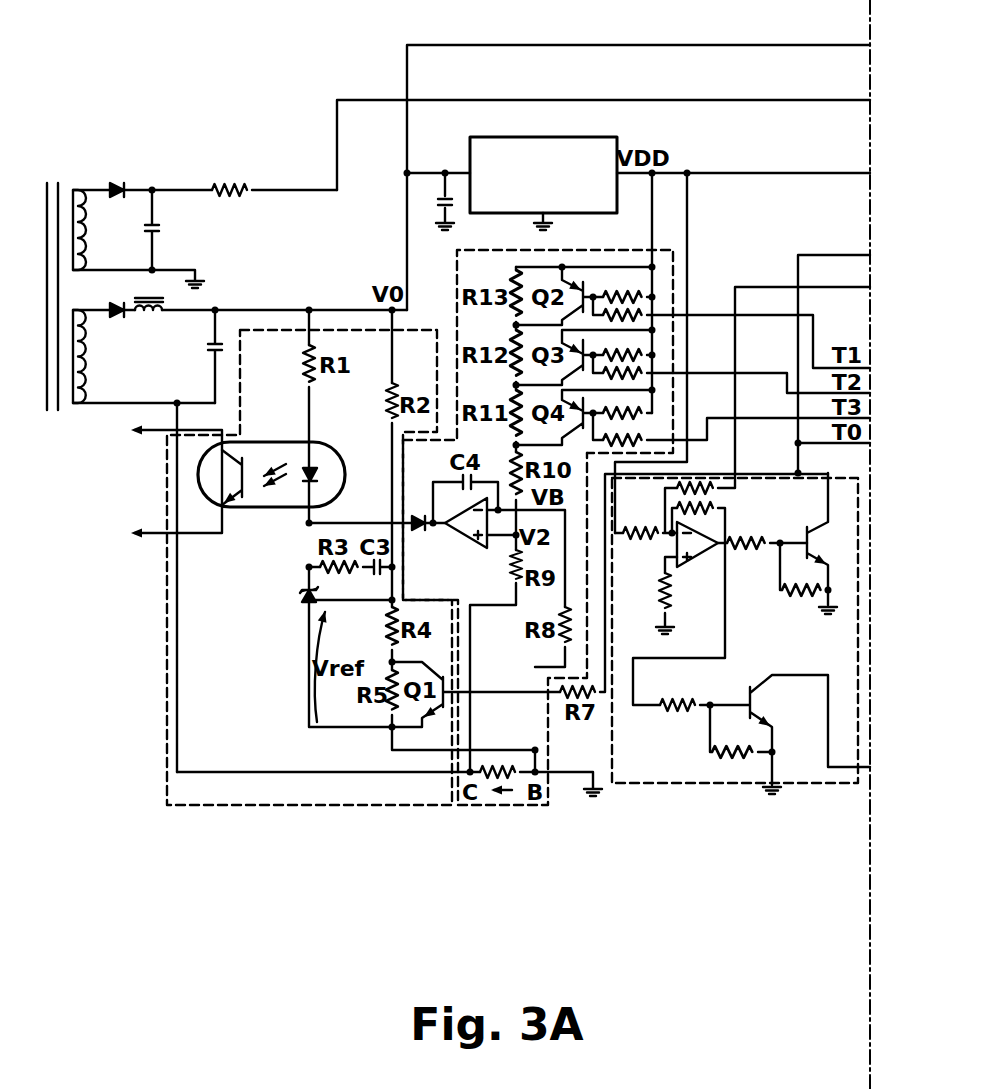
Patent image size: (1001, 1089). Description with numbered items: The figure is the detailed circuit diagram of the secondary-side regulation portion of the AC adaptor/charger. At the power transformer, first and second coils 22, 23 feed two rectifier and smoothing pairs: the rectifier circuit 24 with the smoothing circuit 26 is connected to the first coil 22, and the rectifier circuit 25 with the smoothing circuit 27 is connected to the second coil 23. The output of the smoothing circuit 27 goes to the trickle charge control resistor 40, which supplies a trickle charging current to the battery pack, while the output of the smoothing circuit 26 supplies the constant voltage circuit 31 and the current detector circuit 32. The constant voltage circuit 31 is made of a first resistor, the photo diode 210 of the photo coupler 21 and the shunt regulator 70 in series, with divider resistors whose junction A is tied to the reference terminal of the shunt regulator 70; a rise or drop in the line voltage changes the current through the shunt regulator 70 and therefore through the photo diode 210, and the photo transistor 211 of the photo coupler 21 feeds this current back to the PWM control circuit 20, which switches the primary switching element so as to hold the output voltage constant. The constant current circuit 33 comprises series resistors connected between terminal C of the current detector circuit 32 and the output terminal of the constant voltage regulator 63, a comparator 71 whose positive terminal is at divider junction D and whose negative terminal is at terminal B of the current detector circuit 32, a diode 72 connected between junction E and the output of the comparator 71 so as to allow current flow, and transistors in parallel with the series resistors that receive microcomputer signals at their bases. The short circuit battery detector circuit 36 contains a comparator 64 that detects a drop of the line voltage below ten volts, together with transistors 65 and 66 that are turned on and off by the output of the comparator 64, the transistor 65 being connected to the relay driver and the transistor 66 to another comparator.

The PWM control circuit 20 is at (129, 482).
The photo coupler 21 is at (264, 508).
The photo diode 210 is at (301, 456).
The photo transistor 211 is at (226, 500).
The first coil 22 is at (94, 378).
The second coil 23 is at (80, 187).
The rectifier circuit 24 is at (128, 316).
The rectifier circuit 25 is at (116, 180).
The smoothing circuit 26 is at (207, 350).
The smoothing circuit 27 is at (170, 229).
The constant voltage circuit 31 is at (343, 808).
The current detector circuit 32 is at (508, 795).
The constant current circuit 33 is at (457, 287).
The short circuit battery detector circuit 36 is at (716, 788).
The trickle charge control resistor 40 is at (228, 186).
The constant voltage regulator 63 is at (620, 140).
The comparator 64 is at (697, 560).
The transistor 65 is at (815, 543).
The transistor 66 is at (765, 734).
The shunt regulator 70 is at (294, 604).
The comparator 71 is at (466, 543).
The diode 72 is at (412, 510).